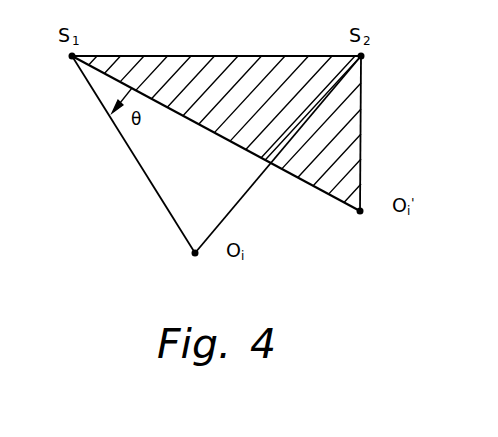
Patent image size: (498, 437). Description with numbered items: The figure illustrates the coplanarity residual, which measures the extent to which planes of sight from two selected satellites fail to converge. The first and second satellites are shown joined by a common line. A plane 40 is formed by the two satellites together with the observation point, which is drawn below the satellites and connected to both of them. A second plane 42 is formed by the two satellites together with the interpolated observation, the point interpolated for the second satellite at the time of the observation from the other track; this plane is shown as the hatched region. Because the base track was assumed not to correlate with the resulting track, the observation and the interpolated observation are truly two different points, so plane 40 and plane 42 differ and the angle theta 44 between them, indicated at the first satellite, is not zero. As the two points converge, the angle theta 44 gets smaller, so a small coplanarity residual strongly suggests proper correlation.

The plane 40 is at (175, 190).
The plane 42 is at (347, 127).
The angle θ 44 is at (123, 118).